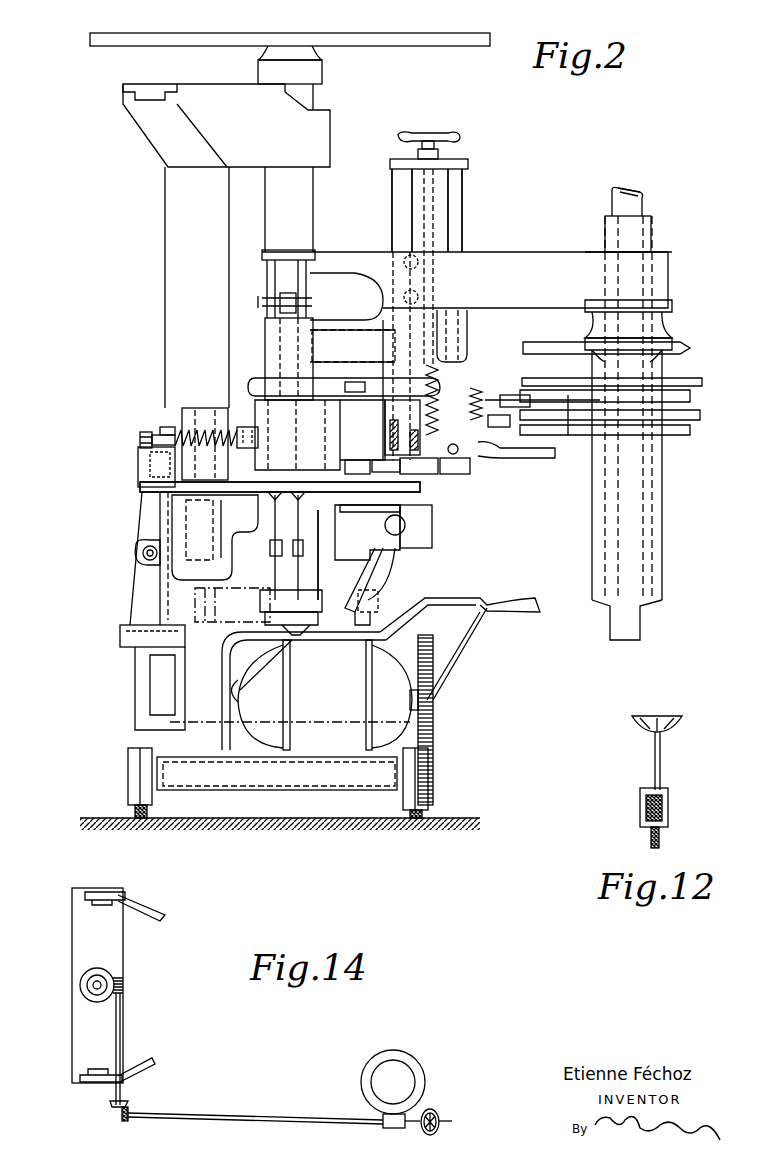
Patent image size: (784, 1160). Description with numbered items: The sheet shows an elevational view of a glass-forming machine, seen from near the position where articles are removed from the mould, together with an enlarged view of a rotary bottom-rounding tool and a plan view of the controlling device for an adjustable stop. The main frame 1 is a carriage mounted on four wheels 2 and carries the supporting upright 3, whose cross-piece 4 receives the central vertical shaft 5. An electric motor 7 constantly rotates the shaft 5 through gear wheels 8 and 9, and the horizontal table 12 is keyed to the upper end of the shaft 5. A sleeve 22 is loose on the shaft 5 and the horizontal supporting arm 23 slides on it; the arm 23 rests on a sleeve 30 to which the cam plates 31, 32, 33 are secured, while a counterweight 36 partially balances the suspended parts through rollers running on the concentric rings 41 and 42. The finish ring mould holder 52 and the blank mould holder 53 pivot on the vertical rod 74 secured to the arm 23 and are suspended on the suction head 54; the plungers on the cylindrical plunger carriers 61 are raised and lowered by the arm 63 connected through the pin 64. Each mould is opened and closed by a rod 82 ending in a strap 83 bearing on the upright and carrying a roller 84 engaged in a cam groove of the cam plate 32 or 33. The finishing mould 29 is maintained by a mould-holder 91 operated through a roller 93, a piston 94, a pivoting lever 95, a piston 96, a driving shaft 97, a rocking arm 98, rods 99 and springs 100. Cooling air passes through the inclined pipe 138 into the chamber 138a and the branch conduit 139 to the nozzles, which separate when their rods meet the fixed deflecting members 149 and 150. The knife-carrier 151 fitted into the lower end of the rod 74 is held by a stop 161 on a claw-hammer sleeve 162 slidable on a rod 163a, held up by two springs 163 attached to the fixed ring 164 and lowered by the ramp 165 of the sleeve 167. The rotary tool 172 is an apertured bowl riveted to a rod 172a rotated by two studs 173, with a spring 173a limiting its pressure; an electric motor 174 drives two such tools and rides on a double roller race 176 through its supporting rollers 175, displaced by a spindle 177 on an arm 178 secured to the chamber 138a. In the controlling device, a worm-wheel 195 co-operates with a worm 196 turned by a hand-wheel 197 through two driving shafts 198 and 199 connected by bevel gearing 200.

In FIG. 2, the main frame 1 is at (293, 778).
In FIG. 2, the wheels 2 is at (128, 770).
In FIG. 2, the supporting upright 3 is at (165, 328).
In FIG. 14, the supporting upright 3 is at (393, 1070).
In FIG. 2, the cross-piece 4 is at (307, 135).
In FIG. 2, the central vertical shaft 5 is at (641, 637).
In FIG. 2, the electric motor 7 is at (383, 676).
In FIG. 2, the gear wheel 8 is at (430, 710).
In FIG. 2, the gear wheel 9 is at (433, 643).
In FIG. 2, the horizontal table 12 is at (462, 33).
In FIG. 2, the sleeve 22 is at (314, 223).
In FIG. 2, the horizontal supporting arm 23 is at (562, 252).
In FIG. 2, the finishing mould 29 is at (270, 430).
In FIG. 2, the sleeve 30 is at (663, 499).
In FIG. 2, the cam plate 31 is at (683, 345).
In FIG. 2, the cam plate 32 is at (690, 378).
In FIG. 2, the cam plate 33 is at (690, 412).
In FIG. 14, the counterweight 36 is at (84, 1036).
In FIG. 2, the concentric ring 41 is at (390, 575).
In FIG. 2, the concentric ring 42 is at (380, 590).
In FIG. 2, the finish ring mould holder 52 is at (316, 368).
In FIG. 2, the blank mould holder 53 is at (348, 383).
In FIG. 2, the suction head 54 is at (265, 352).
In FIG. 2, the cylindrical plunger carriers 61 is at (302, 272).
In FIG. 2, the arm 63 is at (288, 300).
In FIG. 2, the pin 64 is at (264, 304).
In FIG. 2, the vertical rod 74 is at (393, 208).
In FIG. 2, the rod 82 is at (500, 412).
In FIG. 2, the strap 83 is at (568, 440).
In FIG. 2, the roller 84 is at (528, 400).
In FIG. 2, the mould-holder 91 is at (334, 456).
In FIG. 2, the roller 93 is at (170, 688).
In FIG. 2, the piston 94 is at (192, 650).
In FIG. 2, the pivoting lever 95 is at (148, 573).
In FIG. 2, the piston 96 is at (136, 462).
In FIG. 2, the driving shaft 97 is at (165, 462).
In FIG. 2, the rocking arm 98 is at (160, 425).
In FIG. 2, the rods 99 is at (192, 420).
In FIG. 2, the springs 100 is at (244, 430).
In FIG. 2, the inclined pipe 138 is at (378, 600).
In FIG. 2, the chamber 138a is at (406, 522).
In FIG. 2, the branch conduit 139 is at (351, 555).
In FIG. 2, the fixed deflecting member 149 is at (440, 470).
In FIG. 2, the fixed deflecting member 150 is at (422, 487).
In FIG. 2, the knife-carrier 151 is at (360, 470).
In FIG. 2, the stop 161 is at (400, 470).
In FIG. 2, the sleeve 162 is at (472, 466).
In FIG. 2, the springs 163 is at (440, 375).
In FIG. 2, the rod 163a is at (457, 219).
In FIG. 2, the fixed ring 164 is at (448, 358).
In FIG. 2, the ramp 165 is at (453, 455).
In FIG. 2, the sleeve 167 is at (517, 448).
In FIG. 2, the rotary tool 172 is at (272, 500).
In FIG. 12, the rotary tool 172 is at (660, 716).
In FIG. 12, the rod 172a is at (661, 770).
In FIG. 2, the studs 173 is at (291, 546).
In FIG. 12, the studs 173 is at (668, 808).
In FIG. 12, the spring 173a is at (668, 825).
In FIG. 2, the electric motor 174 is at (305, 600).
In FIG. 2, the supporting rollers 175 is at (288, 628).
In FIG. 2, the double roller race 176 is at (462, 600).
In FIG. 2, the spindle 177 is at (359, 532).
In FIG. 2, the arm 178 is at (289, 546).
In FIG. 14, the worm-wheel 195 is at (102, 969).
In FIG. 14, the worm 196 is at (124, 987).
In FIG. 14, the hand-wheel 197 is at (435, 1110).
In FIG. 14, the driving shaft 198 is at (270, 1118).
In FIG. 14, the driving shaft 199 is at (121, 1038).
In FIG. 14, the bevel gearing 200 is at (130, 1108).